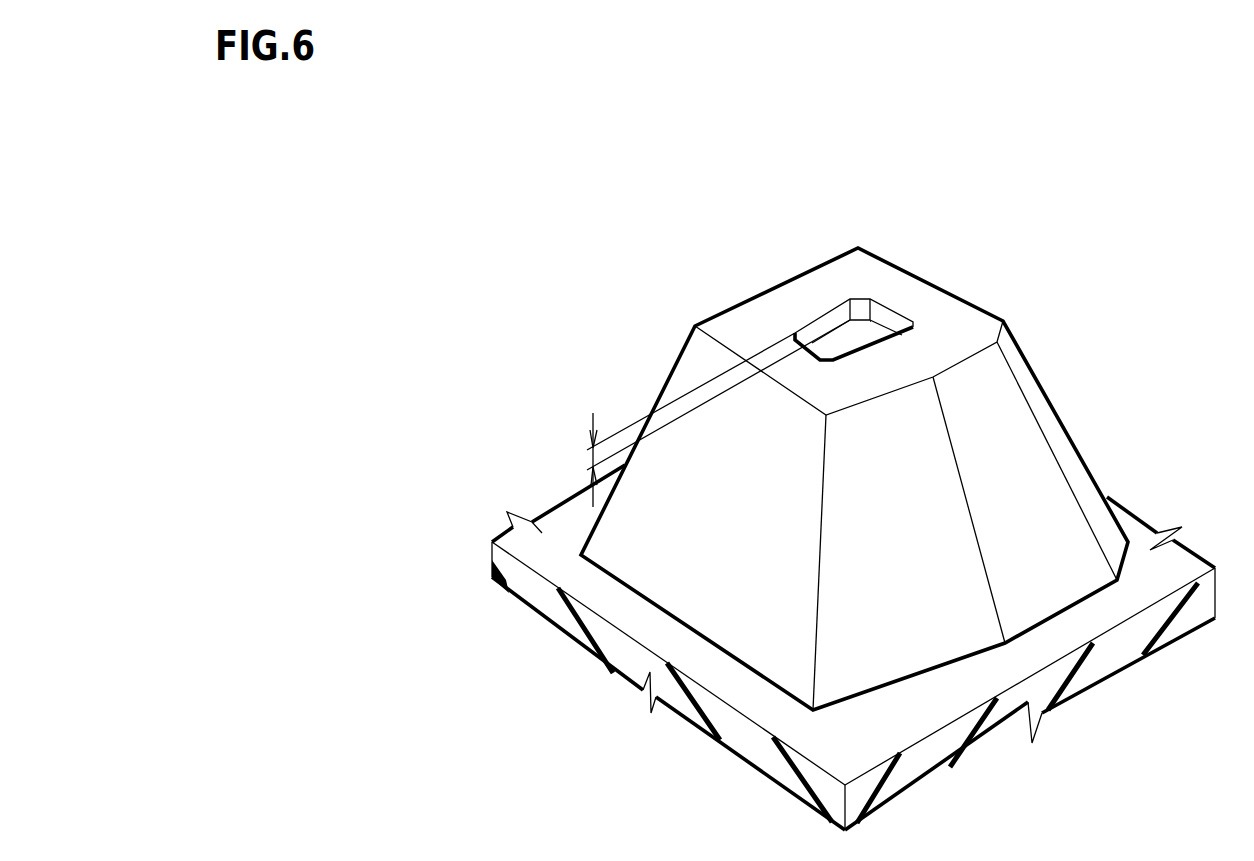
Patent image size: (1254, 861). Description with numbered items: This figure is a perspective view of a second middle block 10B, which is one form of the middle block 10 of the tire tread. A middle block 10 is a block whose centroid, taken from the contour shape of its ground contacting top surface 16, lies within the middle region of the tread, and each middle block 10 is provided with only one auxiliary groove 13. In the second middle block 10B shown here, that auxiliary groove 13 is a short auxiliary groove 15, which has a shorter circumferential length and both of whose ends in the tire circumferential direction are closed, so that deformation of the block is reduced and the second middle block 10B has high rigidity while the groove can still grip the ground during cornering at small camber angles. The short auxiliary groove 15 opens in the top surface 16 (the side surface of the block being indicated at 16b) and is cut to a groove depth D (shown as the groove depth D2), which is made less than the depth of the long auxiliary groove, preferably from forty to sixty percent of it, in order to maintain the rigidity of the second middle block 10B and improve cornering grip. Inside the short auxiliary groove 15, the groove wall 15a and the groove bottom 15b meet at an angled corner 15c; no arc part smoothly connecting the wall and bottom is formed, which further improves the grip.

The middle block 10 is at (850, 480).
The second middle block 10B is at (850, 480).
The ground contacting top surface 16 is at (742, 320).
The inclined side surface of projection 16b is at (835, 444).
The auxiliary groove 13 is at (857, 245).
The short auxiliary groove 15 is at (857, 245).
The groove wall 15a is at (828, 322).
The groove bottom 15b is at (872, 330).
The angled corner 15c is at (815, 342).
The distance D is at (590, 458).
The groove depth D2 is at (667, 413).